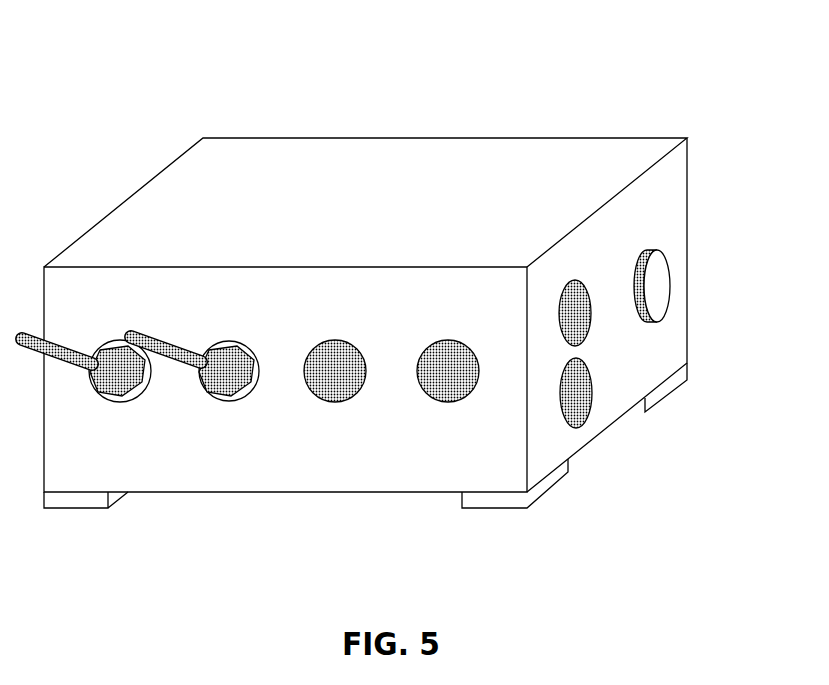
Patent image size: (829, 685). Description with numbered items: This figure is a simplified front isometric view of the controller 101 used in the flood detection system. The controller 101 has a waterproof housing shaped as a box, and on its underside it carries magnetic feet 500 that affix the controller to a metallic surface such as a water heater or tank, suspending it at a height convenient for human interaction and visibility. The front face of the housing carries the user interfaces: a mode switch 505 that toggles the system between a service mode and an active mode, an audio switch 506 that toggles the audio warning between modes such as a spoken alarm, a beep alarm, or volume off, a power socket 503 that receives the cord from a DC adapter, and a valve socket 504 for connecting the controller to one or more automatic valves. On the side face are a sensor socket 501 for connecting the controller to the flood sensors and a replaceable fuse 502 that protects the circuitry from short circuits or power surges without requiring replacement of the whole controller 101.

The controller 101 is at (723, 110).
The magnetic feet 500 is at (118, 515).
The sensor socket 501 is at (587, 348).
The fuse 502 is at (662, 330).
The power socket 503 is at (345, 330).
The valve socket 504 is at (463, 330).
The mode switch 505 is at (122, 330).
The audio switch 506 is at (250, 333).